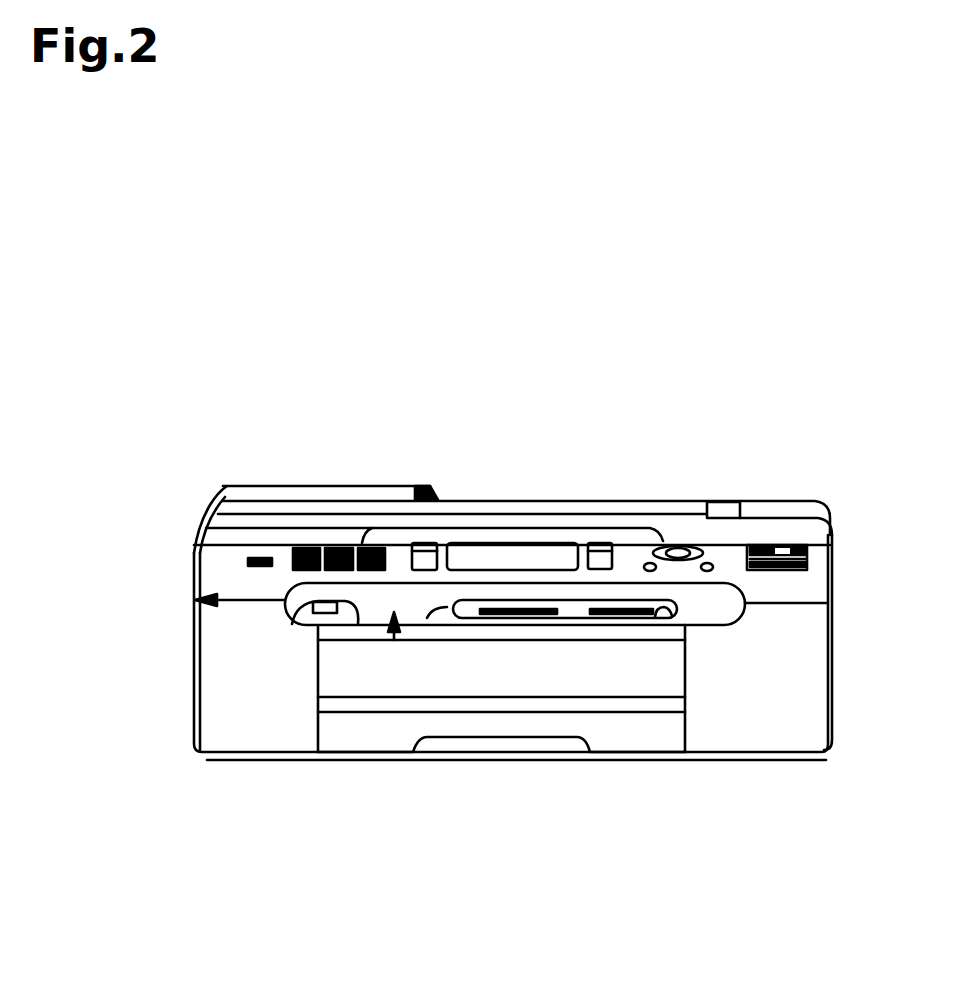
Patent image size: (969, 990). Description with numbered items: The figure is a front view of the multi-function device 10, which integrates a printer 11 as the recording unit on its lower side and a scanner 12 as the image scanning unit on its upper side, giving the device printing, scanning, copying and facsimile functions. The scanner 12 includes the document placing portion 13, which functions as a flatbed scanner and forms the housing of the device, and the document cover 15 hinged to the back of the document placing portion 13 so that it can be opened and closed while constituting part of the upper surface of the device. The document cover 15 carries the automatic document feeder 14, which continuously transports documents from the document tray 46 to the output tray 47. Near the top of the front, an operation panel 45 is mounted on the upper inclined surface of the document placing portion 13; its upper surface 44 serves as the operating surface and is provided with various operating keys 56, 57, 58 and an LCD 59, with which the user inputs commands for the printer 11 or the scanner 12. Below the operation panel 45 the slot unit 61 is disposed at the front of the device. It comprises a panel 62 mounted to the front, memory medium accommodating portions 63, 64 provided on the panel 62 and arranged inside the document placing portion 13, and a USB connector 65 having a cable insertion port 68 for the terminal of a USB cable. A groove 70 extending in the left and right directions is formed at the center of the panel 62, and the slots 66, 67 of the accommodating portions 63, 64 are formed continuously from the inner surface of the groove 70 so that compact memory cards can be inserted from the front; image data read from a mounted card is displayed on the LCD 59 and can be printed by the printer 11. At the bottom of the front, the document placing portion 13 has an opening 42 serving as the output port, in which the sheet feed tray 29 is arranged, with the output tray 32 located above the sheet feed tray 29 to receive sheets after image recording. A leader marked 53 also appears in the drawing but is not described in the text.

The multi-function device 10 is at (770, 403).
The printer 11 is at (183, 740).
The scanner 12 is at (200, 497).
The document placing portion 13 is at (835, 540).
The automatic document feeder 14 is at (277, 483).
The document cover 15 is at (738, 497).
The sheet feed tray 29 is at (633, 733).
The output tray 32 is at (447, 700).
The opening 42 is at (518, 687).
The upper surface 44 is at (210, 570).
The operation panel 45 is at (205, 602).
The document tray 46 is at (467, 497).
The output tray 47 is at (643, 497).
The latch 53 is at (420, 487).
The operating key 56 is at (598, 497).
The operating key 57 is at (780, 570).
The operating key 58 is at (293, 550).
The LCD 59 is at (520, 497).
The slot unit 61 is at (393, 620).
The panel 62 is at (707, 610).
The memory medium accommodating portion 63 is at (567, 610).
The memory medium accommodating portion 64 is at (667, 600).
The USB connector 65 is at (352, 625).
The slot 66 is at (513, 603).
The slot 67 is at (598, 605).
The cable insertion port 68 is at (290, 617).
The groove 70 is at (397, 640).